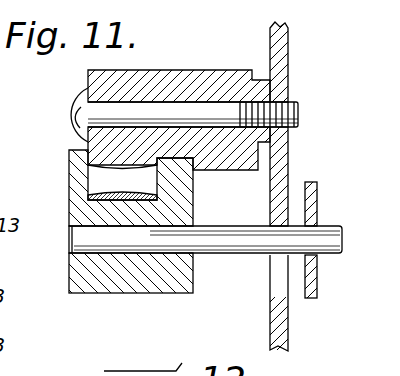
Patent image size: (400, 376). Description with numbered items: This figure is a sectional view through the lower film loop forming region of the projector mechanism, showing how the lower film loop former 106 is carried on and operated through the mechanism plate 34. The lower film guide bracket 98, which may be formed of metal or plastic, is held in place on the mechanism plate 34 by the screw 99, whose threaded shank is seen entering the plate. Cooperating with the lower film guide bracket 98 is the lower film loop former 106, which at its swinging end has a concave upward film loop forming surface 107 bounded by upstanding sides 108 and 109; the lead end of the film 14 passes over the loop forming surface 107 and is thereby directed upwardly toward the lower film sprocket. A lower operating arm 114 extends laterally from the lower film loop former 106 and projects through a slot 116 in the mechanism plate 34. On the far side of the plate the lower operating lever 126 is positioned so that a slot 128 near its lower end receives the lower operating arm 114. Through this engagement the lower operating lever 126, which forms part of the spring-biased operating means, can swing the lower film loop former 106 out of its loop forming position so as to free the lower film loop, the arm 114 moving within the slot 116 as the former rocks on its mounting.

The lower film guide bracket 98 is at (172, 69).
The mechanism plate 34 is at (289, 49).
The screw 99 is at (72, 102).
The upstanding side 108 is at (69, 152).
The film loop forming surface 107 is at (103, 194).
The upstanding side 109 is at (194, 183).
The film 14 is at (160, 196).
The lower operating arm 114 is at (322, 236).
The lower operating lever 126 is at (317, 186).
The slot 128 is at (316, 259).
The slot 116 is at (278, 276).
The lower film loop former 106 is at (118, 296).